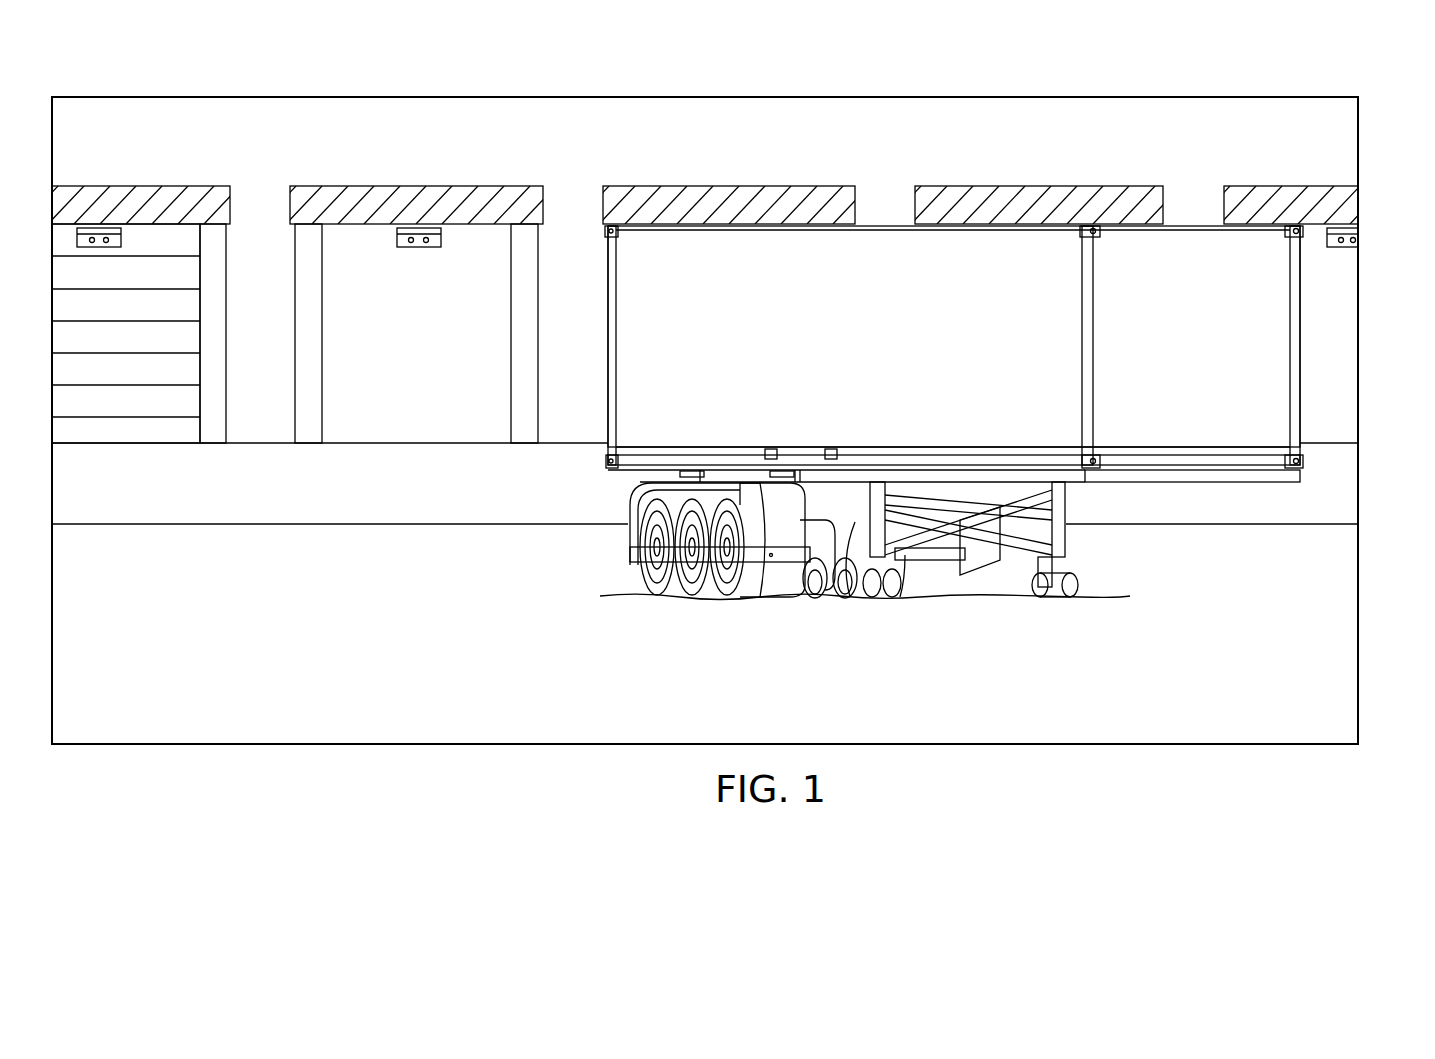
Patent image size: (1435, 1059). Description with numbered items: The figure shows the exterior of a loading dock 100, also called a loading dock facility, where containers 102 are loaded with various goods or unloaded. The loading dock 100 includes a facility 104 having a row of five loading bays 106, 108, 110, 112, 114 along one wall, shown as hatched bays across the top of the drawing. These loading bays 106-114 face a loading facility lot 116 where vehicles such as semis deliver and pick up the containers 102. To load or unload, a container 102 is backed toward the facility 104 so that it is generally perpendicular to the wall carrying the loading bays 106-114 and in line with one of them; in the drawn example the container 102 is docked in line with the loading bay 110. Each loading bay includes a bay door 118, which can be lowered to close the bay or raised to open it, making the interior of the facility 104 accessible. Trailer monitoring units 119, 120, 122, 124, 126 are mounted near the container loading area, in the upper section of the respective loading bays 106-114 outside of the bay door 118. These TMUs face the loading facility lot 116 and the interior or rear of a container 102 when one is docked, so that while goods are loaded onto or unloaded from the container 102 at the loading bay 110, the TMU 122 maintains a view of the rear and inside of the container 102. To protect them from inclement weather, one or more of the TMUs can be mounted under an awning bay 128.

The loading dock 100 is at (120, 60).
The container 102 is at (1230, 350).
The facility 104 is at (958, 115).
The loading bay 106 is at (188, 207).
The loading bay 108 is at (342, 205).
The loading bay 110 is at (835, 202).
The loading bay 112 is at (1123, 203).
The loading bay 114 is at (1270, 195).
The loading facility lot 116 is at (217, 601).
The bay door 118 is at (138, 425).
The trailer monitoring unit 119 is at (100, 233).
The trailer monitoring unit 120 is at (417, 233).
The trailer monitoring unit 122 is at (723, 211).
The trailer monitoring unit 124 is at (1070, 209).
The trailer monitoring unit 126 is at (1347, 234).
The awning bay 128 is at (87, 187).